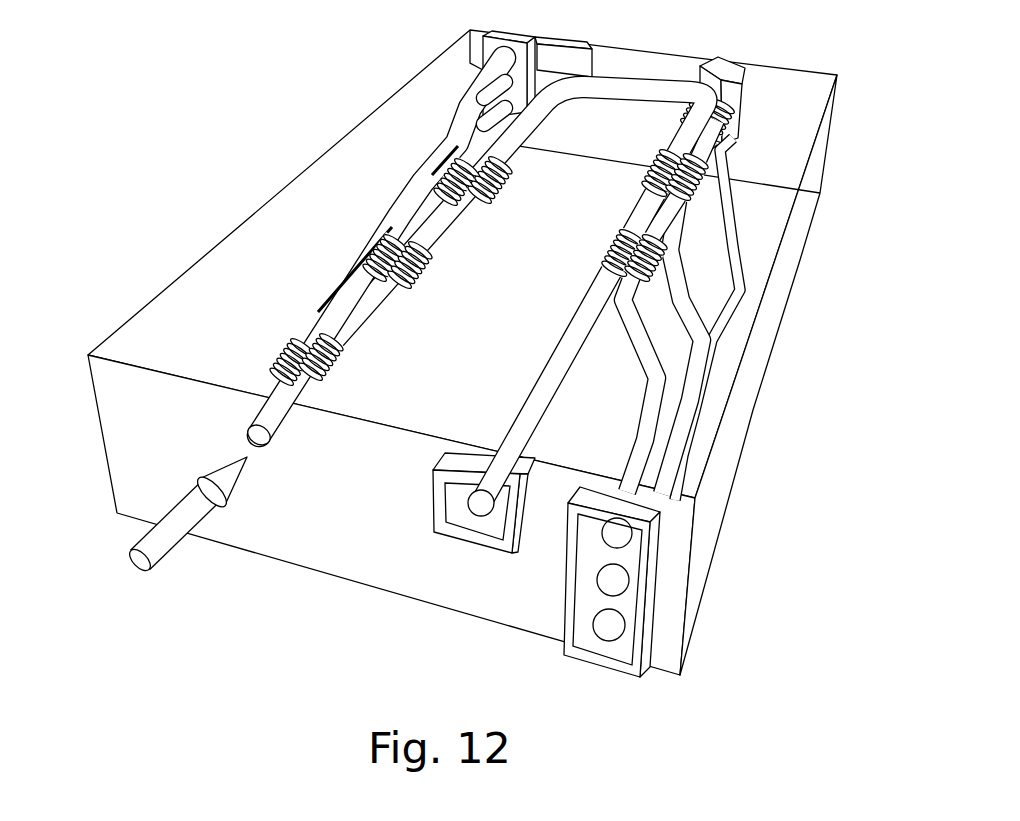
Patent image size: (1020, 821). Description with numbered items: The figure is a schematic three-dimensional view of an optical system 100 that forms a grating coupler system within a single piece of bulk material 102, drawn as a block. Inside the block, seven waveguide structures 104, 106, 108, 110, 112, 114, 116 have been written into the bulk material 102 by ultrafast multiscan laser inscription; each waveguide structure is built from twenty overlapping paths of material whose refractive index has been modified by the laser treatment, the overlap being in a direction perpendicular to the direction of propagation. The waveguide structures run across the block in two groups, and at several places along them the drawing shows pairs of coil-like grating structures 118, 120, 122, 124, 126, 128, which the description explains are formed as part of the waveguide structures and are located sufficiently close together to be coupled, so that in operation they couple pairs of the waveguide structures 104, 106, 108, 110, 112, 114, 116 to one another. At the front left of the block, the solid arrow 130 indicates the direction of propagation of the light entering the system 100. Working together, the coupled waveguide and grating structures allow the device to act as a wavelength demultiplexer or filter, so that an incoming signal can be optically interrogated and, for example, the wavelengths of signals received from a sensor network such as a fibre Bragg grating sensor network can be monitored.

The optical system 100 is at (390, 152).
The piece of bulk material 102 is at (270, 207).
The waveguide structure 104 is at (278, 440).
The waveguide structure 106 is at (378, 320).
The waveguide structure 108 is at (447, 140).
The waveguide structure 110 is at (465, 97).
The waveguide structure 112 is at (690, 230).
The waveguide structure 114 is at (731, 247).
The waveguide structure 116 is at (648, 343).
The spring 118 is at (263, 353).
The spring 120 is at (393, 297).
The spring 122 is at (500, 170).
The post 124 is at (716, 88).
The spring 126 is at (673, 162).
The spring 128 is at (604, 263).
The solid arrow 130 is at (143, 565).